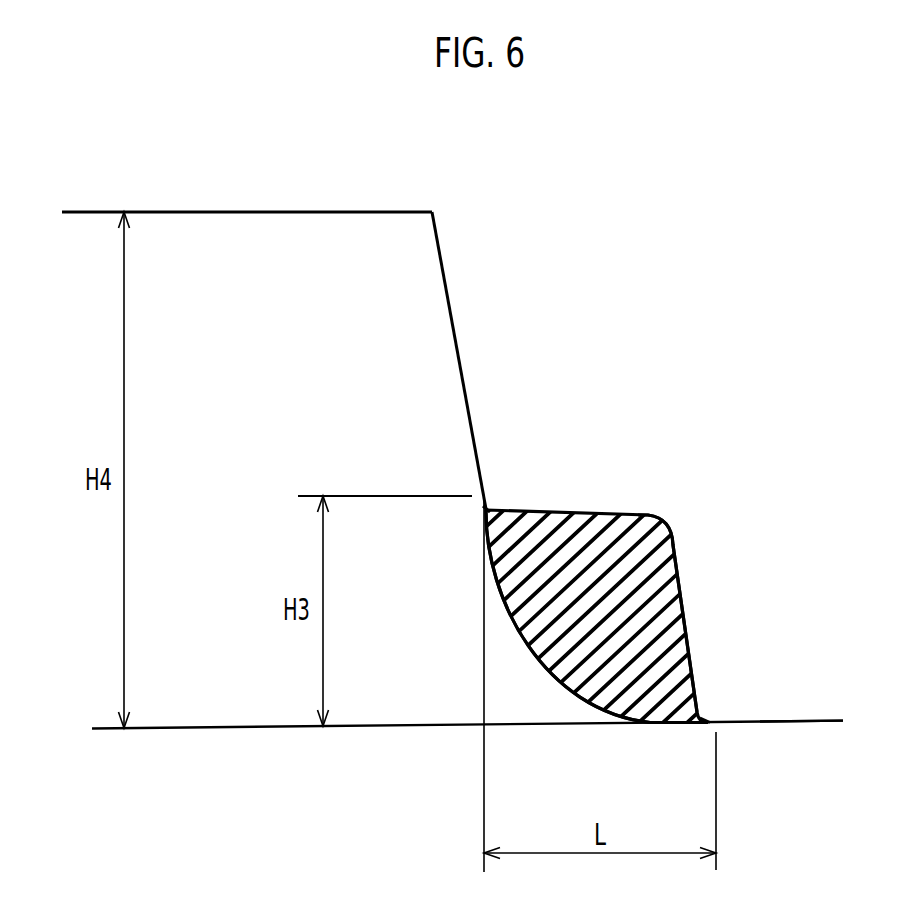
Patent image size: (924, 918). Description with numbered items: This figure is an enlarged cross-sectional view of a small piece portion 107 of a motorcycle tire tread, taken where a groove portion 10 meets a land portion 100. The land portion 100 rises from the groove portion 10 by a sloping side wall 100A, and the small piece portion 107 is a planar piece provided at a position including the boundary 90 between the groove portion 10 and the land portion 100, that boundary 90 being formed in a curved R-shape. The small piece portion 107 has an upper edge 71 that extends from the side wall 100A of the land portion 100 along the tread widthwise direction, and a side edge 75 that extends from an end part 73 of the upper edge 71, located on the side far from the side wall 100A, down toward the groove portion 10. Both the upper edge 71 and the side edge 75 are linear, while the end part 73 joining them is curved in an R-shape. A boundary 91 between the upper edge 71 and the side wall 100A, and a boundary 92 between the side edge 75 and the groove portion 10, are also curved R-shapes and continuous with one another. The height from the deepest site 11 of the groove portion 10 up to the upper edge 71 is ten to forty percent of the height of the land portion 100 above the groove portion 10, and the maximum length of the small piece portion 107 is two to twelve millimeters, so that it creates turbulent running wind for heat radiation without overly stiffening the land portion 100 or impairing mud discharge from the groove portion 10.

The land portion 100 is at (345, 190).
The side wall of the land portion 100A is at (447, 296).
The small piece portion 107 is at (680, 420).
The upper edge 71 is at (590, 513).
The end part of the upper edge 73 is at (669, 513).
The side edge 75 is at (685, 608).
The boundary between the groove portion and the land portion 90 is at (522, 637).
The boundary between the upper edge and the side wall 91 is at (489, 503).
The boundary between the side edge and the groove portion 92 is at (706, 718).
The groove portion 10 is at (835, 696).
The deepest site of the groove portion 11 is at (797, 722).